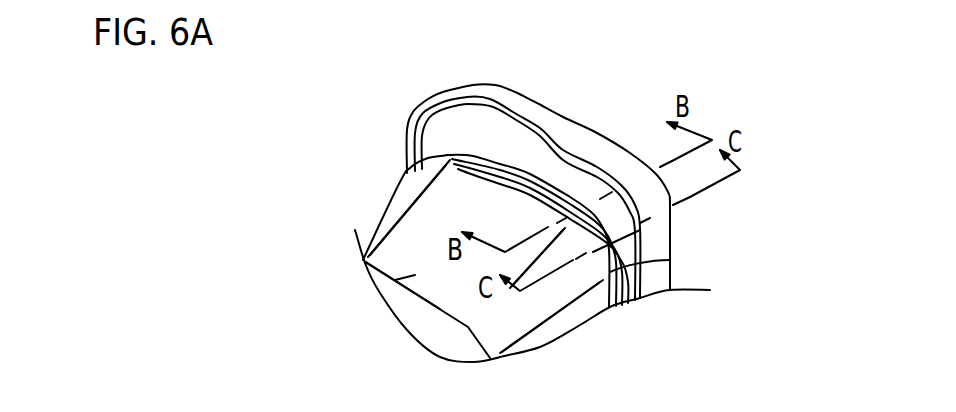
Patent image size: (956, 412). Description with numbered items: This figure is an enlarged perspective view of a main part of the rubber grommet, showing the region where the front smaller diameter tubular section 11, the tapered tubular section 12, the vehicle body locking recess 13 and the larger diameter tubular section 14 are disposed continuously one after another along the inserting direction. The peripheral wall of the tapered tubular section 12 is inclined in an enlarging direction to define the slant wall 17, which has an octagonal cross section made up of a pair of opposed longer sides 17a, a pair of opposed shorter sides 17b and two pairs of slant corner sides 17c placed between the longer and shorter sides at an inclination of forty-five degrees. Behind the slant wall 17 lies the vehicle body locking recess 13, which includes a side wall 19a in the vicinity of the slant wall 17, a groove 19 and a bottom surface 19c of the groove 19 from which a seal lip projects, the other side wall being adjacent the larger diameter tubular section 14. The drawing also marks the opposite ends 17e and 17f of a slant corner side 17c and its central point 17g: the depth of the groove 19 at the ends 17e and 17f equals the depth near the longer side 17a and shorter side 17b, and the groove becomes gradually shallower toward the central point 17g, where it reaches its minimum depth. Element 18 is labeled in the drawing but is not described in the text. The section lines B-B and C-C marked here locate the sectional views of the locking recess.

The smaller diameter tubular section 11 is at (420, 328).
The tapered tubular section 12 is at (388, 198).
The vehicle body locking recess 13 is at (457, 148).
The larger diameter tubular section 14 is at (498, 82).
The slant wall 17 is at (413, 226).
The longer side 17a is at (377, 297).
The shorter side 17b is at (577, 321).
The slant corner side 17c is at (410, 188).
The opposite end of slant side 17e is at (556, 218).
The opposite end of slant side 17f is at (670, 260).
The central point 17g is at (640, 230).
The insulator 18 is at (523, 103).
The groove 19 is at (591, 195).
The side wall 19a is at (561, 195).
The bottom surface 19c is at (530, 172).